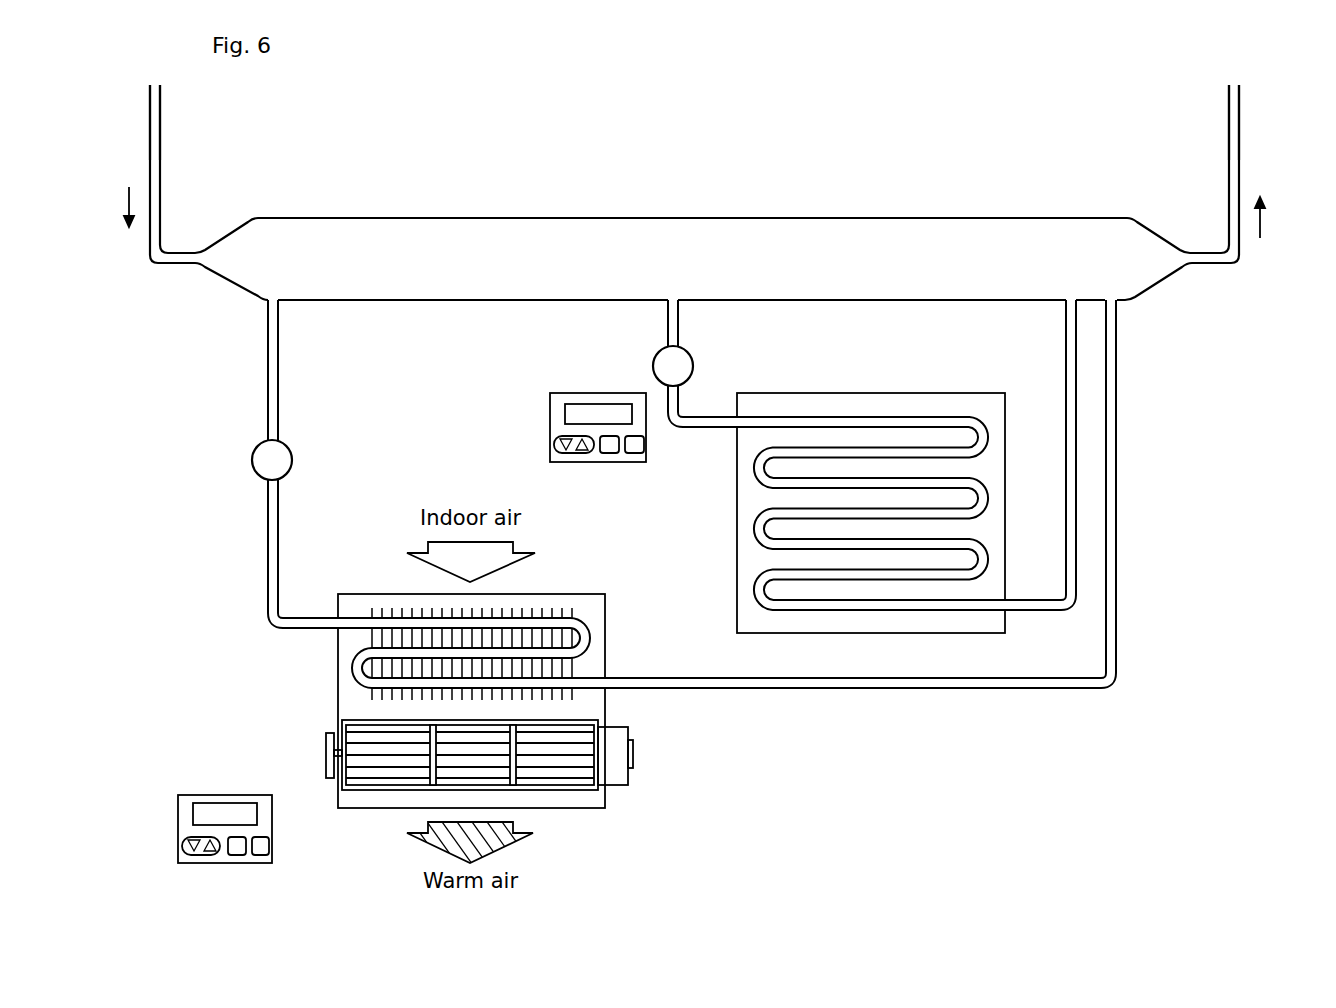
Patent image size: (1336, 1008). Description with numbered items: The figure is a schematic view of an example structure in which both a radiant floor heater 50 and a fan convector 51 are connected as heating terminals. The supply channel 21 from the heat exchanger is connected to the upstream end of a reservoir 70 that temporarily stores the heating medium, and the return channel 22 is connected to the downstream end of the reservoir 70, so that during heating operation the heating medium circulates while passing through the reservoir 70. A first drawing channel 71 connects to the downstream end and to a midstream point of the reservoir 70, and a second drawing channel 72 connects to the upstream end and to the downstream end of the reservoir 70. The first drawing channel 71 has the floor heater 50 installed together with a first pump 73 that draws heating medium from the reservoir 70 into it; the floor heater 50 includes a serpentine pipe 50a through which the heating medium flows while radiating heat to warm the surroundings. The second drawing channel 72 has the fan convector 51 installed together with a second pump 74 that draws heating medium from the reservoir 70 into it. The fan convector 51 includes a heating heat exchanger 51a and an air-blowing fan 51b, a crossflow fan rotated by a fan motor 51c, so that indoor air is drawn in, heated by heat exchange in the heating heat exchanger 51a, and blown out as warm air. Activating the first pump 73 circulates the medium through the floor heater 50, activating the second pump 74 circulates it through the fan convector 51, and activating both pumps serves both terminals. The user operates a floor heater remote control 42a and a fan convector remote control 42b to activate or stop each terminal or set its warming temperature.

The supply channel 21 is at (150, 133).
The return channel 22 is at (1240, 127).
The reservoir 70 is at (474, 218).
The first drawing channel 71 is at (679, 325).
The second drawing channel 72 is at (279, 348).
The first pump 73 is at (694, 368).
The second pump 74 is at (293, 462).
The floor heater 50 is at (737, 508).
The serpentine pipe 50a is at (983, 480).
The fan convector 51 is at (338, 695).
The heating heat exchanger 51a is at (578, 615).
The air-blowing fan 51b is at (368, 792).
The fan motor 51c is at (620, 790).
The floor heater remote control 42a is at (550, 415).
The fan convector remote control 42b is at (178, 815).